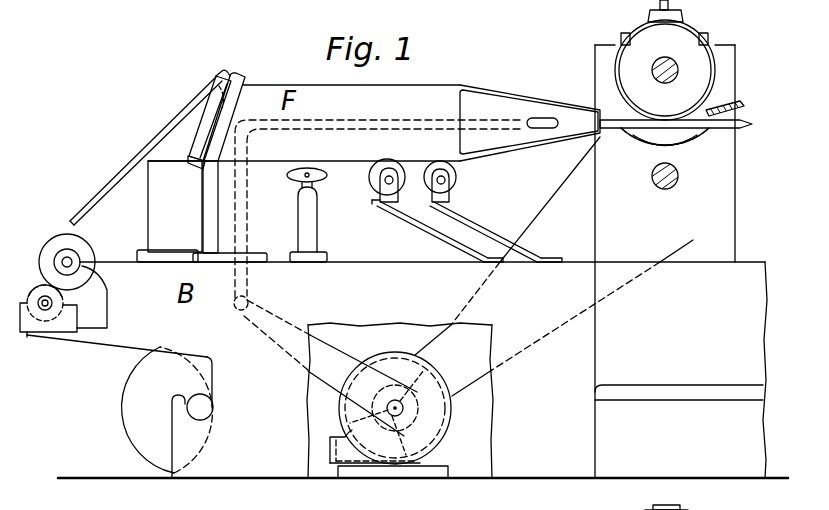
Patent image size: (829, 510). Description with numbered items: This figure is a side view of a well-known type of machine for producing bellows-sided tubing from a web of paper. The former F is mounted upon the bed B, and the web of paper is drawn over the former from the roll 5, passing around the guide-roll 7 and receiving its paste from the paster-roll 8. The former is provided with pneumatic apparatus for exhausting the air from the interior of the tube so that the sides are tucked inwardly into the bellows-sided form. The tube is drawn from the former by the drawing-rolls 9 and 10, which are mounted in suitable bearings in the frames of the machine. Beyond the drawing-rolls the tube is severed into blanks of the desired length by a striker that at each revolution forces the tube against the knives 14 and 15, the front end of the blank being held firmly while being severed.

The roll 5 is at (167, 412).
The guide-roll 7 is at (52, 254).
The paster-roll 8 is at (38, 300).
The drawing-roll 9 is at (665, 70).
The drawing-roll 10 is at (665, 176).
The knife 14 is at (738, 128).
The knife 15 is at (721, 108).